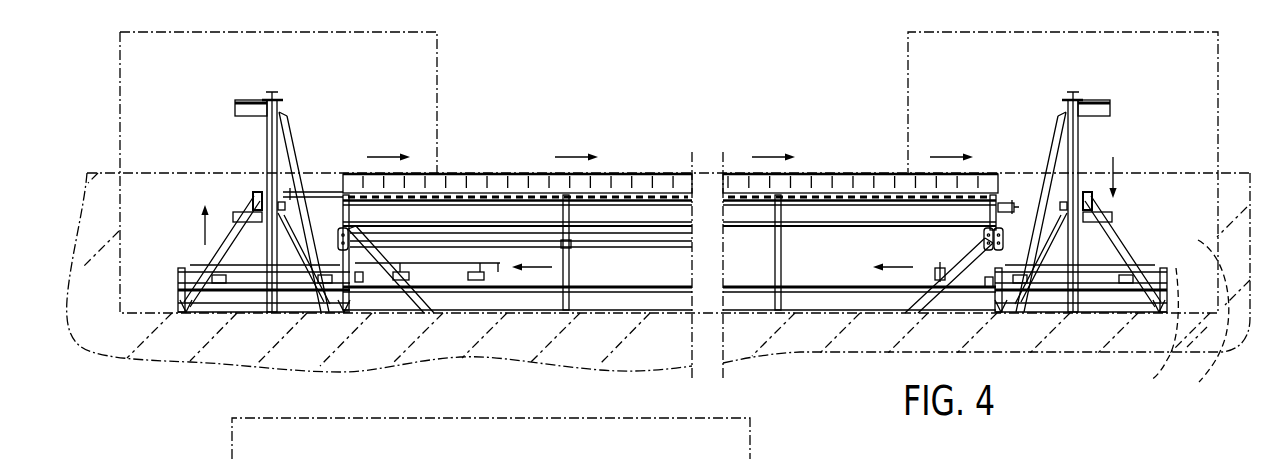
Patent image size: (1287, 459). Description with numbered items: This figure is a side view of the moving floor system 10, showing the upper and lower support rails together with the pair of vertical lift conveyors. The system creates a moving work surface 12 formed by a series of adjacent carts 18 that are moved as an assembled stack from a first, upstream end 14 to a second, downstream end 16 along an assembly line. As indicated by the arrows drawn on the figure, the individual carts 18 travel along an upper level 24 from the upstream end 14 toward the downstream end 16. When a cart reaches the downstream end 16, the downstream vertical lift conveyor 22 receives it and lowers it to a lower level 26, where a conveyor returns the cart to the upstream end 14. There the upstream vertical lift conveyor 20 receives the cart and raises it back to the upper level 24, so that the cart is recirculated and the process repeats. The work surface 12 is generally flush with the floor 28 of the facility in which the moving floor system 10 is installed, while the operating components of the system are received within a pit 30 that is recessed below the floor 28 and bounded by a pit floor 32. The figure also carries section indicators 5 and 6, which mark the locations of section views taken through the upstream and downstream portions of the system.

The section line 5- 5 is at (148, 385).
The section line 6- 6 is at (358, 385).
The moving floor system 10 is at (583, 126).
The work surface 12 is at (640, 173).
The upstream end 14 is at (321, 166).
The downstream end 16 is at (993, 151).
The carts 18 is at (452, 184).
The upstream vertical lift conveyor 20 is at (290, 121).
The downstream vertical lift conveyor 22 is at (1127, 163).
The upper level 24 is at (820, 151).
The lower level 26 is at (808, 324).
The floor 28 is at (1235, 173).
The pit 30 is at (1199, 382).
The pit floor 32 is at (1149, 379).